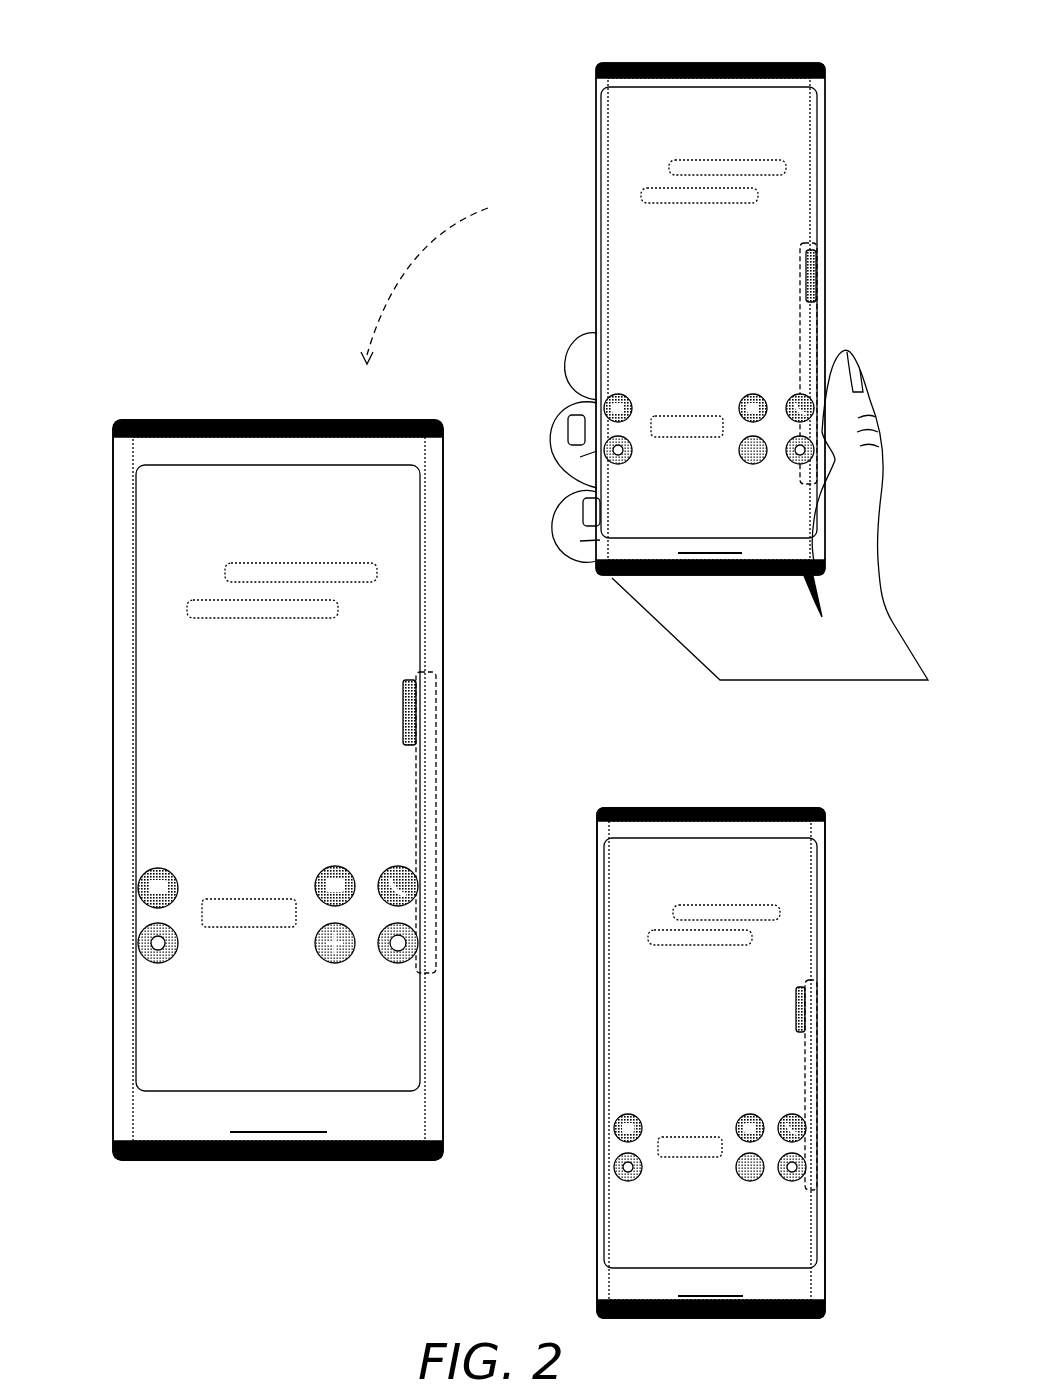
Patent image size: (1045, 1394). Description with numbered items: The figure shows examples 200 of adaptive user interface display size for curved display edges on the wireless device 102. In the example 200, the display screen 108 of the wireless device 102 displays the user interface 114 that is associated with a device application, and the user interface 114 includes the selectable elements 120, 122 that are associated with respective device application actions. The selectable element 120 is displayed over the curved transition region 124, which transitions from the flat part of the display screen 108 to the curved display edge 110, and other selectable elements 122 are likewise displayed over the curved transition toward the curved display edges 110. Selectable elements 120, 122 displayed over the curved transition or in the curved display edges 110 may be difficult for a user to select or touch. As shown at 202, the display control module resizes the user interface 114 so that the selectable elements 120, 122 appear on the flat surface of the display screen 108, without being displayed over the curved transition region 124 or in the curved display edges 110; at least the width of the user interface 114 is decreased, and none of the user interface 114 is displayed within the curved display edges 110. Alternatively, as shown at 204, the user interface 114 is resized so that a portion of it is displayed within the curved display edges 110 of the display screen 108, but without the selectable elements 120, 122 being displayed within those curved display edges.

The examples 200 is at (432, 97).
The resized user interface example 202 is at (215, 312).
The alternative resized user interface example 204 is at (650, 742).
The wireless device 102 is at (165, 418).
The display screen 108 is at (250, 448).
The curved display edge 110 is at (123, 705).
The user interface 114 is at (153, 550).
The selectable element 120 is at (403, 685).
The selectable elements 122 is at (186, 886).
The curved transition region 124 is at (432, 806).